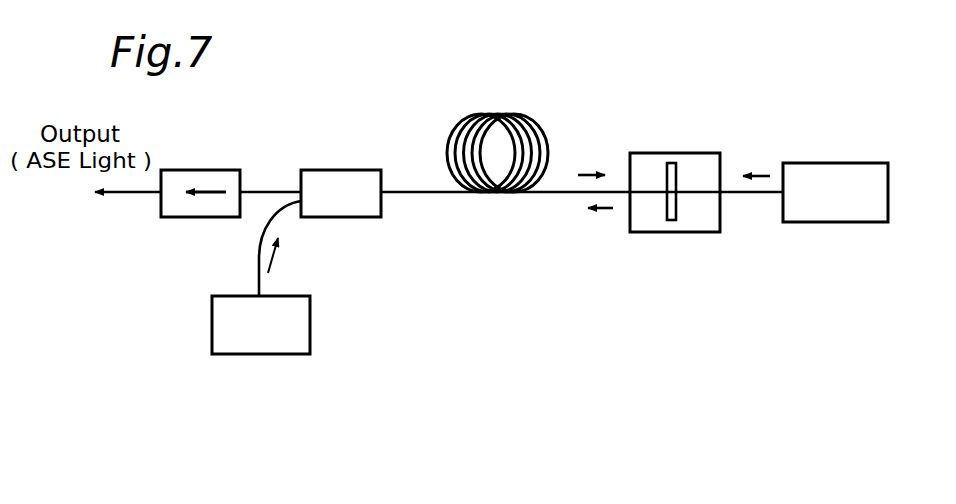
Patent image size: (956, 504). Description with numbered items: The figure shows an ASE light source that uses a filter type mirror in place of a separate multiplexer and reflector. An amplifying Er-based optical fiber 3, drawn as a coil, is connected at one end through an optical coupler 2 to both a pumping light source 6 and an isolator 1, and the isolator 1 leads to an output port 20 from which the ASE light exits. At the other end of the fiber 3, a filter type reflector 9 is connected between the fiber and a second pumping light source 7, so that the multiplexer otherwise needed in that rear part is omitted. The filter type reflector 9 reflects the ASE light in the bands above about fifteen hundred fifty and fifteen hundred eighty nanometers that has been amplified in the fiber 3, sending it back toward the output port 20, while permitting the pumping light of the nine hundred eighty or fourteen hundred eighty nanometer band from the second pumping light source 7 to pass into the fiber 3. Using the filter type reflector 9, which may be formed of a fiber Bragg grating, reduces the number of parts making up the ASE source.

The isolator 1 is at (198, 170).
The optical coupler 2 is at (340, 170).
The amplifying optical fiber 3 is at (535, 195).
The pumping light source 6 is at (312, 317).
The second pumping light source 7 is at (832, 163).
The filter type reflector 9 is at (678, 180).
The output port 20 is at (121, 196).